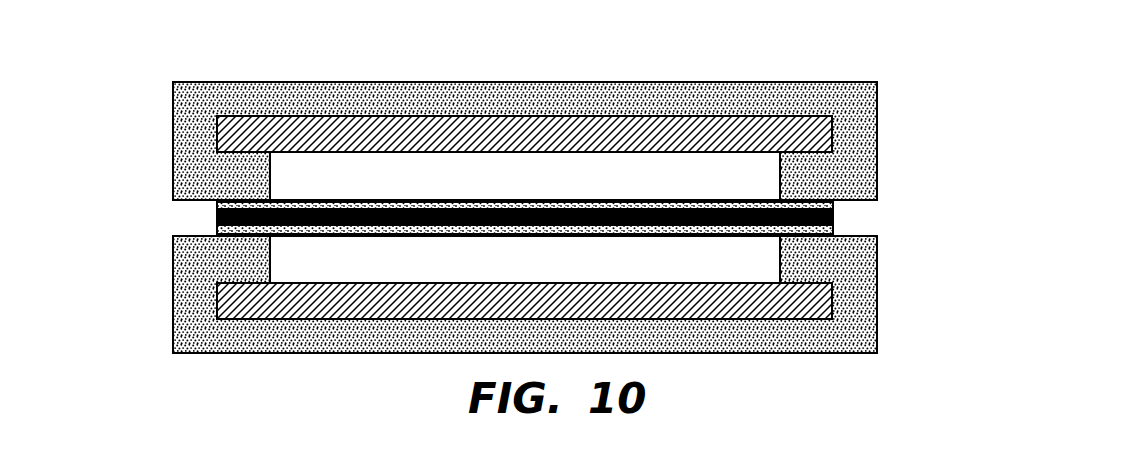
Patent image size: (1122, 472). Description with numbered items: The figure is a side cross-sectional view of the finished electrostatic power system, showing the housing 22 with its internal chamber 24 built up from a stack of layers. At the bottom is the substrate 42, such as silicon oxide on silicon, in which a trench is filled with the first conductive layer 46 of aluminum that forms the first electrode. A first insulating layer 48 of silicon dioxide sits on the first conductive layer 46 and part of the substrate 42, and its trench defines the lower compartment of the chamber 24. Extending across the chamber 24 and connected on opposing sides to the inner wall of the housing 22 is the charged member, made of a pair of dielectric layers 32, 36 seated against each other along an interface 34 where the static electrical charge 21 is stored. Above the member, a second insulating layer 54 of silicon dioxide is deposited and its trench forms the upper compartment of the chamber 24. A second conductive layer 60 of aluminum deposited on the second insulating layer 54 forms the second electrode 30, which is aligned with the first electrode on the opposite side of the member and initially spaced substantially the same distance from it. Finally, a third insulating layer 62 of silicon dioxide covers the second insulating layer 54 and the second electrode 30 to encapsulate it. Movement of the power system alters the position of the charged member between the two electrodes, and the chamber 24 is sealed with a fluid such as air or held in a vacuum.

The stored static electrical charge 21 is at (607, 139).
The housing 22 is at (520, 155).
The chamber 24 is at (566, 189).
The second electrode 30 is at (584, 90).
The layer of dielectric material 32 is at (830, 227).
The interface 34 is at (607, 219).
The layer of dielectric material 36 is at (830, 206).
The substrate 42 is at (862, 336).
The first conductive layer 46 is at (222, 304).
The first insulating layer 48 is at (182, 262).
The second insulating layer 54 is at (183, 182).
The second conductive layer 60 is at (742, 122).
The third insulating layer 62 is at (862, 92).